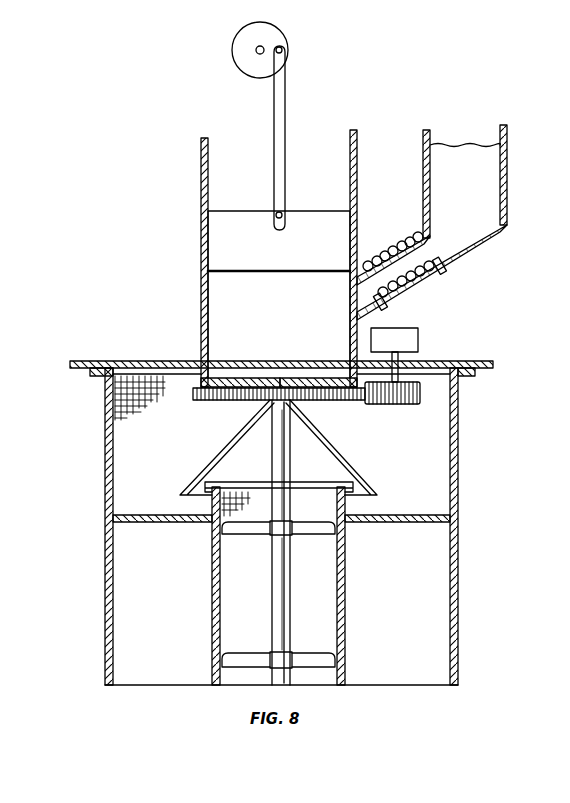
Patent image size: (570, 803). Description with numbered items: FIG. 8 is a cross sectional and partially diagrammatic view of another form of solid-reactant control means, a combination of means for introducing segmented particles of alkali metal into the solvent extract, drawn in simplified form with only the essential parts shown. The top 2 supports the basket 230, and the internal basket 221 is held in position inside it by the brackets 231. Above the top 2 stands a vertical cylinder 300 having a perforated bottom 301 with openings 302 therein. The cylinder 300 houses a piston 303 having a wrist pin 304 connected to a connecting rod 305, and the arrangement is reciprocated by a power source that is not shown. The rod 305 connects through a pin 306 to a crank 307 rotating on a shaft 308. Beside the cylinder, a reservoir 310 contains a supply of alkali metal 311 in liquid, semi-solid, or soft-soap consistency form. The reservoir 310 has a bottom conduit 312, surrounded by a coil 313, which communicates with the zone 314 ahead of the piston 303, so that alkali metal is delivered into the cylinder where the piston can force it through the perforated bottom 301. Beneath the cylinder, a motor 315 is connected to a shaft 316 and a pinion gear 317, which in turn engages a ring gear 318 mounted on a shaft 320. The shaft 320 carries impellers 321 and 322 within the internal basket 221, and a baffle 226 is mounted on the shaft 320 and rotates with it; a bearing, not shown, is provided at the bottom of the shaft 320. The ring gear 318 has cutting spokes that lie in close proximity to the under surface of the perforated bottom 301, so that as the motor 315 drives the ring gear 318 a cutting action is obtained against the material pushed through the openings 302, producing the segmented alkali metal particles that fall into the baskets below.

The top 2 is at (485, 363).
The internal basket 221 is at (346, 599).
The baffle 226 is at (341, 460).
The basket 230 is at (458, 437).
The brackets 231 is at (394, 522).
The vertical cylinder 300 is at (201, 242).
The perforated bottom 301 is at (298, 381).
The openings 302 is at (255, 381).
The piston 303 is at (254, 214).
The wrist pin 304 is at (283, 215).
The connecting rod 305 is at (286, 154).
The pin 306 is at (283, 50).
The crank 307 is at (283, 34).
The shaft 308 is at (256, 51).
The reservoir 310 is at (507, 152).
The alkali metal 311 is at (476, 148).
The bottom conduit 312 is at (449, 258).
The coil 313 is at (416, 287).
The zone 314 is at (279, 324).
The motor 315 is at (418, 333).
The shaft 316 is at (399, 357).
The pinion gear 317 is at (405, 404).
The ring gear 318 is at (211, 401).
The shaft 320 is at (273, 473).
The impeller 321 is at (262, 536).
The impeller 322 is at (268, 655).